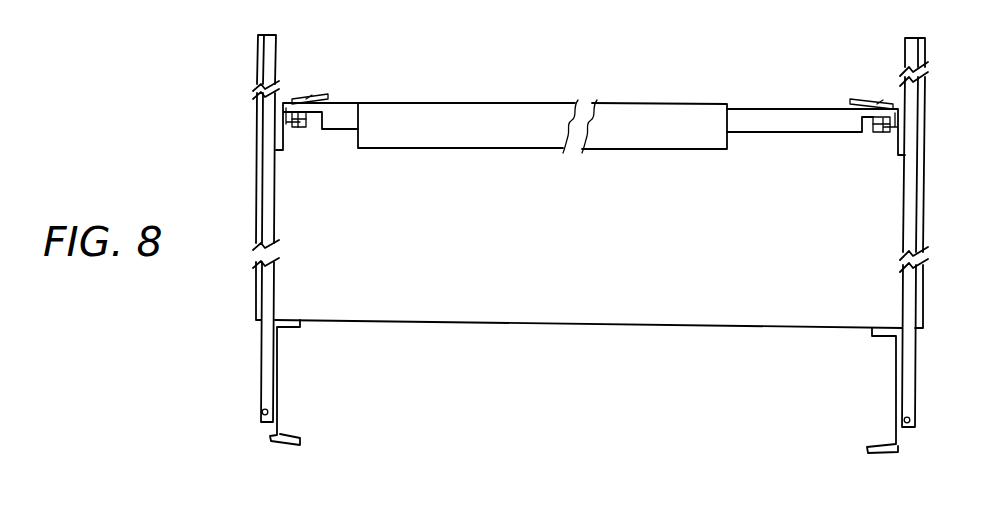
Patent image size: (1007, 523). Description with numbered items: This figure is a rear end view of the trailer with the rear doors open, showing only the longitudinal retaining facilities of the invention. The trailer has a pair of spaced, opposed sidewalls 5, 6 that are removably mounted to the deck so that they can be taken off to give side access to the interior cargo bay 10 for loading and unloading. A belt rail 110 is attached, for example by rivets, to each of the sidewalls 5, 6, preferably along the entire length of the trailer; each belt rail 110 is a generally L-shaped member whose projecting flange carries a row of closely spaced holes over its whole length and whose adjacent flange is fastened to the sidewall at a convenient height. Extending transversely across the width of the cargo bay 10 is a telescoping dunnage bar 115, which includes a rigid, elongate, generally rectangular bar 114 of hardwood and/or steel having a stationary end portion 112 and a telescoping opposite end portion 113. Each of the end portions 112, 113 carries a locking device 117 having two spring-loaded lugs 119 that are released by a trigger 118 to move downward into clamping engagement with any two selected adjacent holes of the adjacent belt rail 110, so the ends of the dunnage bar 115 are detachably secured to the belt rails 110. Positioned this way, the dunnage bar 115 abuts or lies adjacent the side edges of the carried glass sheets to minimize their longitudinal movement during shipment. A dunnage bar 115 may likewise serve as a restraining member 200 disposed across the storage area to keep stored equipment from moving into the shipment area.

The sidewall 5 is at (270, 198).
The sidewall 6 is at (917, 185).
The cargo bay 10 is at (569, 172).
The belt rail 110 is at (284, 124).
The stationary end portion 112 is at (342, 110).
The telescoping opposite end portion 113 is at (746, 113).
The bar 114 is at (542, 146).
The dunnage bar 115 is at (438, 113).
The locking device 117 is at (309, 98).
The trigger 118 is at (302, 98).
The spring-loaded lug 119 is at (301, 125).
The restraining member 200 is at (693, 161).